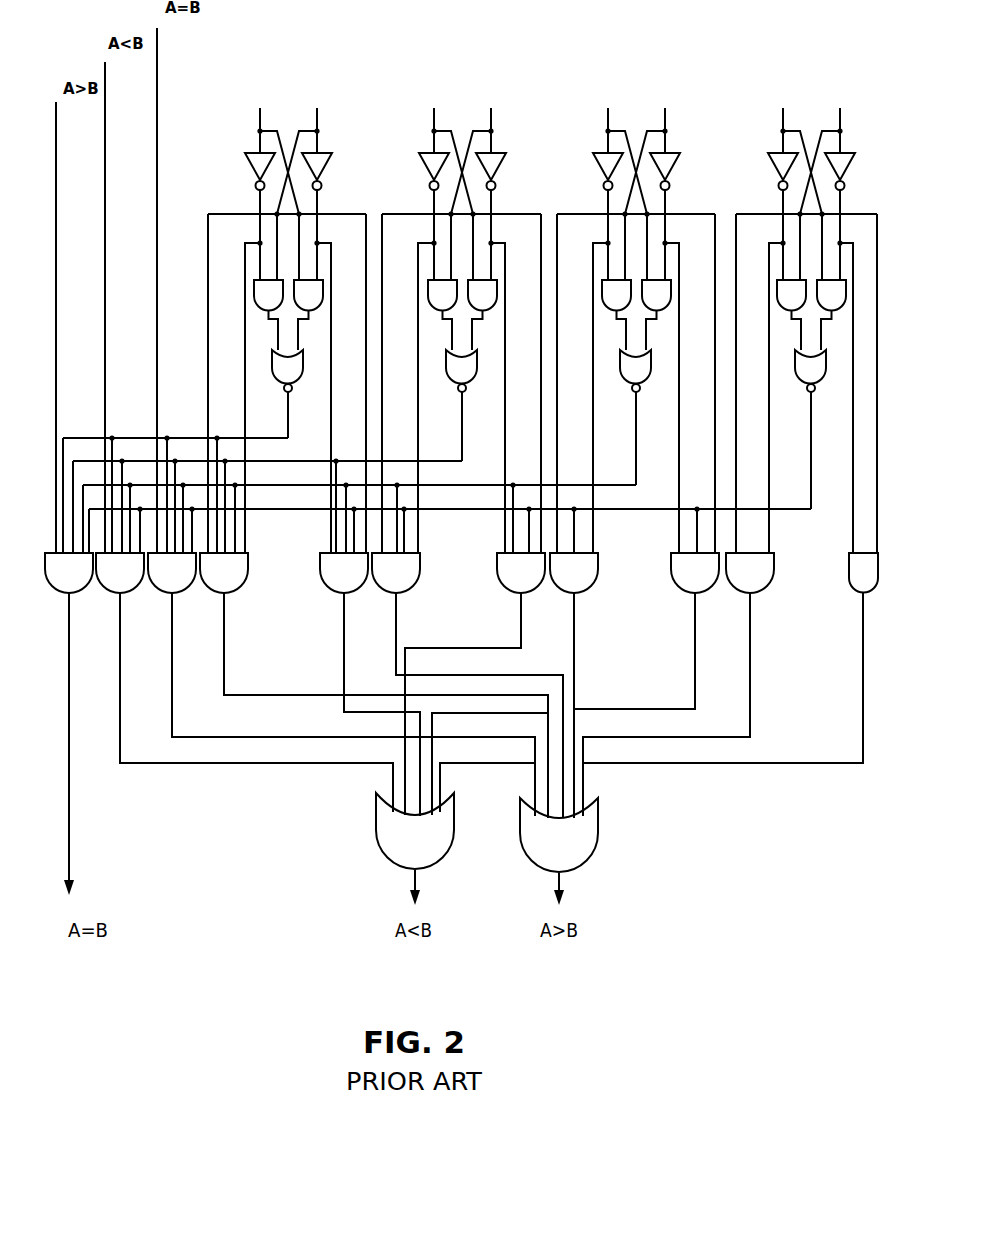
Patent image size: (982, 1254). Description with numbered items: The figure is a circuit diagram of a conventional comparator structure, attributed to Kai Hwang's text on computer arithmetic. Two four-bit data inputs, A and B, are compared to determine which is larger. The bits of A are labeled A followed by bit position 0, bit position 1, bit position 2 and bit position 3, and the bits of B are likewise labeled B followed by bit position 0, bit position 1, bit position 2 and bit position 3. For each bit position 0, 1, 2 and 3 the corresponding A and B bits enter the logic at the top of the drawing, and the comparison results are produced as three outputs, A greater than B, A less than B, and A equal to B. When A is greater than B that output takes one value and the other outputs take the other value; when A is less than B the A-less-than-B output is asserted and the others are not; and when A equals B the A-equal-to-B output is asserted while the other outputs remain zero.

The bit 0 comparator slice (B0/A0 inverters, AND gates, NOR gate) 0 is at (287, 316).
The bit 1 comparator slice (B1/A1 inverters, AND gates, NOR gate) 1 is at (461, 316).
The bit 2 comparator slice (B2/A2 inverters, AND gates, NOR gate) 2 is at (636, 316).
The bit 3 comparator slice (B3/A3 inverters, AND gates, NOR gate) 3 is at (806, 316).